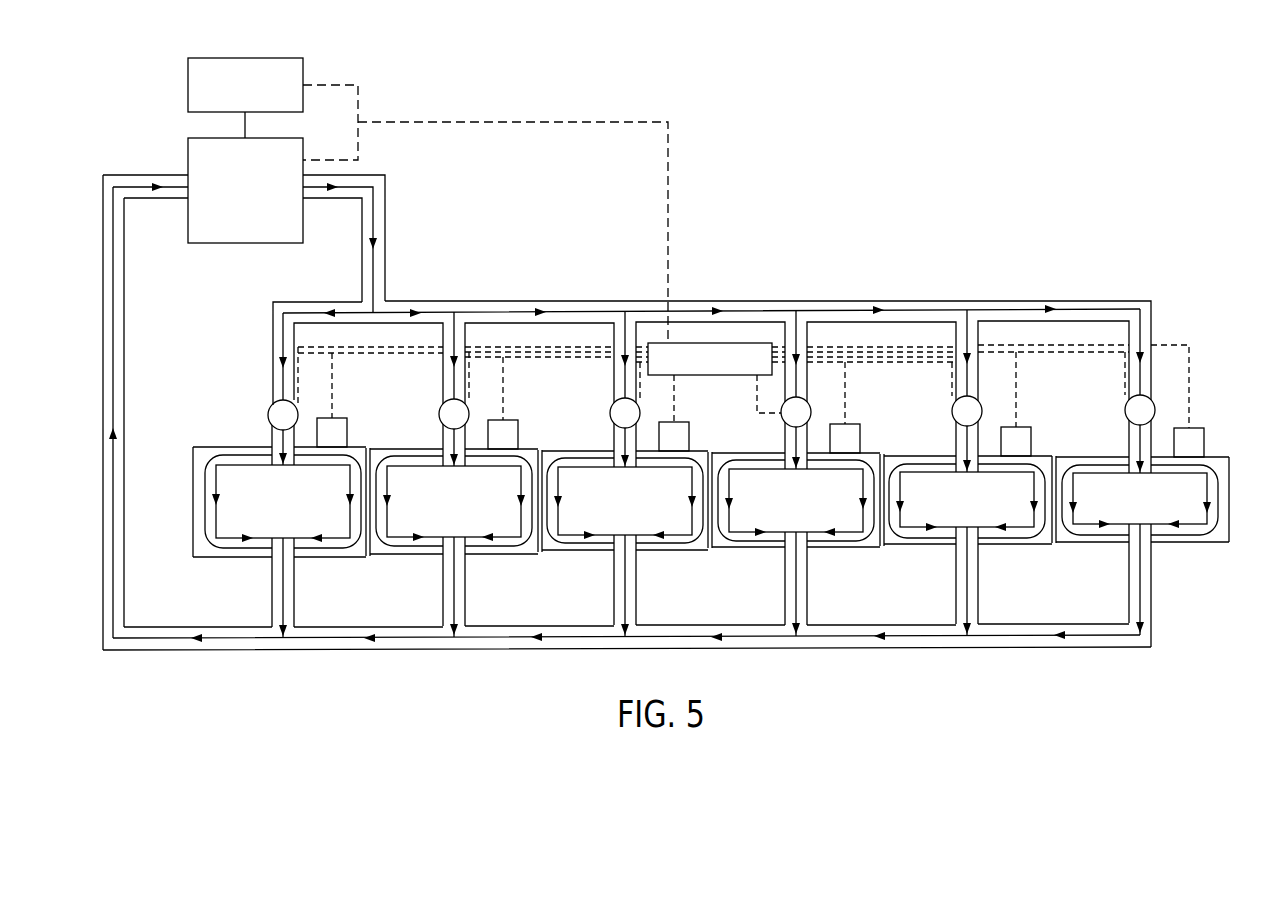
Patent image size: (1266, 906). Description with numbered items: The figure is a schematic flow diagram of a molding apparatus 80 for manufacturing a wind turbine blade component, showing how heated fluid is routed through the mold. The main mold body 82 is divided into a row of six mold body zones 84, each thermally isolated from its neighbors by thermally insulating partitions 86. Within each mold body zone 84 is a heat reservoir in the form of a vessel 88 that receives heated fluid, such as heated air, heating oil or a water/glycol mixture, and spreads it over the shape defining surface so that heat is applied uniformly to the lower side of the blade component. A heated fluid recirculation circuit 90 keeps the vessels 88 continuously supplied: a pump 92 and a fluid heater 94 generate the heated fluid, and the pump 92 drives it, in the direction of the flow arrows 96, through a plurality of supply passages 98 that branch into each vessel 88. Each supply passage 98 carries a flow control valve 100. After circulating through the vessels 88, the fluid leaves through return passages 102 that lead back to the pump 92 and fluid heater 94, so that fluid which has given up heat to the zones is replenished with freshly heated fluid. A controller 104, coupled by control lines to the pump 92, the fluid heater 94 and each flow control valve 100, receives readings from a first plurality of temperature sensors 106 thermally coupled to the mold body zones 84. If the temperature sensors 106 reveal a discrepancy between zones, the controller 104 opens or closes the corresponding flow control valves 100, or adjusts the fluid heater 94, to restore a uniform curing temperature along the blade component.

The molding apparatus 80 is at (1044, 219).
The main mold body 82 is at (1191, 549).
The mold body zones 84 is at (290, 507).
The thermally insulating partitions 86 is at (366, 556).
The vessel 88 is at (225, 548).
The heated fluid recirculation circuit 90 is at (133, 325).
The pump 92 is at (303, 72).
The fluid heater 94 is at (188, 152).
The flow arrows 96 is at (385, 217).
The supply passages 98 is at (550, 300).
The flow control valves 100 is at (268, 413).
The return passages 102 is at (507, 650).
The controller 104 is at (755, 343).
The temperature sensors 106 is at (348, 432).